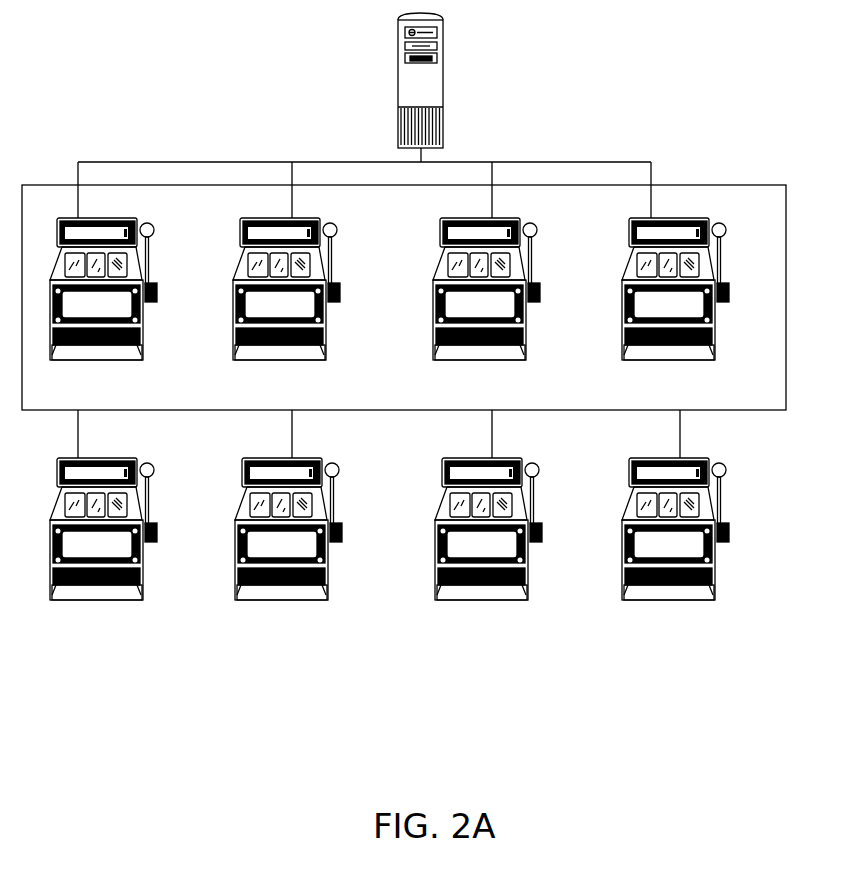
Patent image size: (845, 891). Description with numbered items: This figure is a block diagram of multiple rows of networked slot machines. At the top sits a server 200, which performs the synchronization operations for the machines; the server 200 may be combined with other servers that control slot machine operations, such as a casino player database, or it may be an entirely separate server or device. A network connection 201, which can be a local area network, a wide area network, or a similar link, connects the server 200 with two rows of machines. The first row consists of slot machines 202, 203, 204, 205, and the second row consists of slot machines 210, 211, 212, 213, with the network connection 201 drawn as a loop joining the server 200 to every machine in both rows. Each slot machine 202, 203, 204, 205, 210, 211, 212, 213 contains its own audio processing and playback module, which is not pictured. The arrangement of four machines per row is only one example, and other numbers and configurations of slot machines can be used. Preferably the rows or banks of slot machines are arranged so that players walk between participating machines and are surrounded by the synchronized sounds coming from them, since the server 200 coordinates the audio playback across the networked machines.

The server 200 is at (405, 89).
The network connection 201 is at (778, 287).
The slot machine 202 is at (65, 237).
The slot machine 203 is at (239, 237).
The slot machine 204 is at (439, 245).
The slot machine 205 is at (625, 272).
The slot machine 210 is at (60, 498).
The slot machine 211 is at (239, 475).
The slot machine 212 is at (445, 475).
The slot machine 213 is at (632, 475).